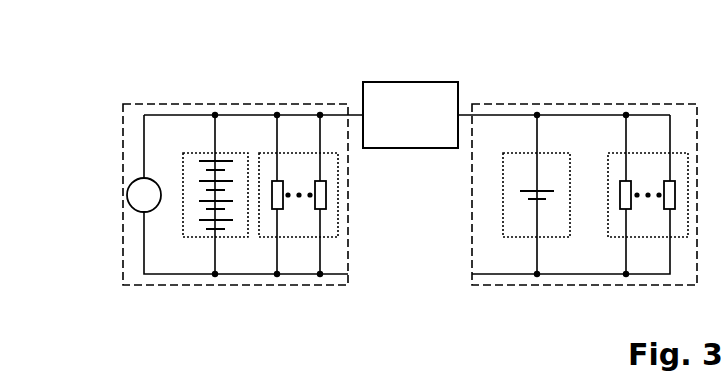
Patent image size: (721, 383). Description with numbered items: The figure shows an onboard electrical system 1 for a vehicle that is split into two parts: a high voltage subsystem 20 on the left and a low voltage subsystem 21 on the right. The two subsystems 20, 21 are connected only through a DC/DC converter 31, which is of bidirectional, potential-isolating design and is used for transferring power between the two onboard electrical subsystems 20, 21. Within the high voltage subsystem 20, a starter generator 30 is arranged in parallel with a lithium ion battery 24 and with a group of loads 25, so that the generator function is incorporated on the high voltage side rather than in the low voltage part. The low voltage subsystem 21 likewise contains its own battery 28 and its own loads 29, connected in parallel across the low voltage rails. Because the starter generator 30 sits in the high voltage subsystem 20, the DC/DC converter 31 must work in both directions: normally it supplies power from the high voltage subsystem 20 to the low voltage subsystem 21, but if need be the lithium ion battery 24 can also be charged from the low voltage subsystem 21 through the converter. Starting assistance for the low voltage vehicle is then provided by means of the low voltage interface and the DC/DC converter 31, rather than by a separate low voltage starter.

The onboard electrical system 1 is at (673, 77).
The high voltage subsystem 20 is at (235, 104).
The low voltage subsystem 21 is at (584, 104).
The lithium ion battery 24 is at (196, 238).
The loads 25 is at (269, 238).
The battery 28 is at (516, 238).
The loads 29 is at (618, 238).
The starter generator 30 is at (128, 202).
The DC/DC converter 31 is at (410, 82).